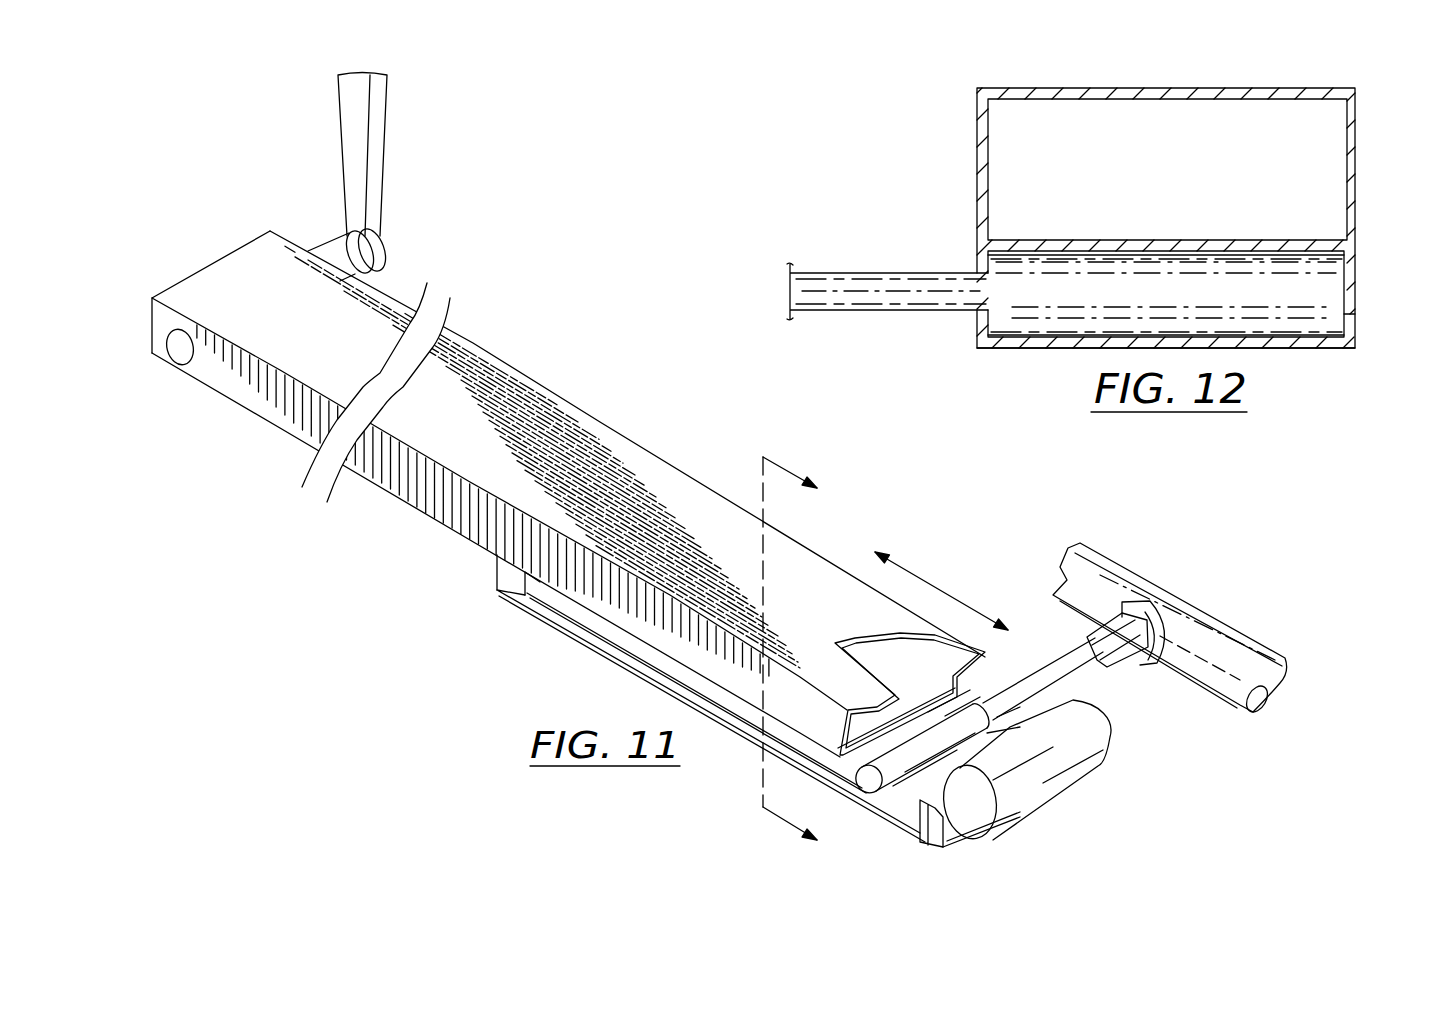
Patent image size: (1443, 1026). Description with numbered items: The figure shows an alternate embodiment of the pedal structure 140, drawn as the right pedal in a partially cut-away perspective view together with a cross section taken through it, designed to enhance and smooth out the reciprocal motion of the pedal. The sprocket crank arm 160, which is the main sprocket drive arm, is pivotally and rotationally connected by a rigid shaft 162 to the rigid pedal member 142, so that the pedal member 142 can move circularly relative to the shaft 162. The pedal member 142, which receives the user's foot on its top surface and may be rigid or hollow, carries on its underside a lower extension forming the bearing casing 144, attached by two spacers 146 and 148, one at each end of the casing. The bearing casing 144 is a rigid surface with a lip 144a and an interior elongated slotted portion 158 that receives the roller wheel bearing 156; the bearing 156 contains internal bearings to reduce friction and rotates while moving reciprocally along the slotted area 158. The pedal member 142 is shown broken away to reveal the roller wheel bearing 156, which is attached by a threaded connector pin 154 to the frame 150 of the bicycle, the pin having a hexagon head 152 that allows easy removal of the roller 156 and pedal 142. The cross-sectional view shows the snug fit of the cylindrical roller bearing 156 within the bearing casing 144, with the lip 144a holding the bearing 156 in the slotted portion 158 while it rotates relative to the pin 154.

In FIG. 11, the pedal structure 140 is at (707, 482).
In FIG. 11, the rigid pedal member 142 is at (470, 358).
In FIG. 12, the rigid pedal member 142 is at (1124, 88).
In FIG. 11, the bearing casing 144 is at (550, 618).
In FIG. 12, the bearing casing 144 is at (1302, 349).
In FIG. 11, the lip 144a is at (627, 660).
In FIG. 12, the lip 144a is at (1358, 327).
In FIG. 11, the spacer 146 is at (512, 577).
In FIG. 11, the spacer 148 is at (933, 820).
In FIG. 11, the frame 150 is at (1190, 627).
In FIG. 11, the hexagon head 152 is at (1120, 652).
In FIG. 11, the connector pin 154 is at (973, 706).
In FIG. 12, the connector pin 154 is at (869, 273).
In FIG. 11, the roller wheel bearing 156 is at (1023, 650).
In FIG. 12, the roller wheel bearing 156 is at (1299, 292).
In FIG. 11, the slotted portion 158 is at (752, 713).
In FIG. 11, the sprocket crank arm 160 is at (375, 158).
In FIG. 11, the rigid shaft 162 is at (322, 240).